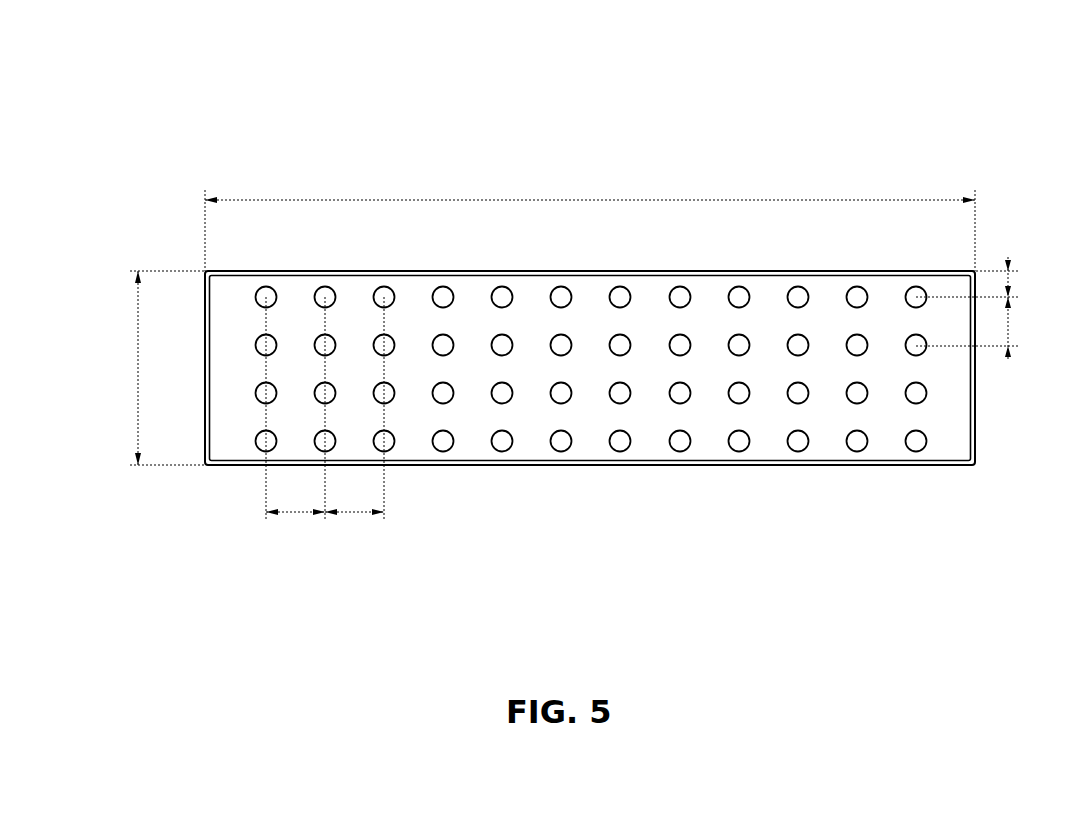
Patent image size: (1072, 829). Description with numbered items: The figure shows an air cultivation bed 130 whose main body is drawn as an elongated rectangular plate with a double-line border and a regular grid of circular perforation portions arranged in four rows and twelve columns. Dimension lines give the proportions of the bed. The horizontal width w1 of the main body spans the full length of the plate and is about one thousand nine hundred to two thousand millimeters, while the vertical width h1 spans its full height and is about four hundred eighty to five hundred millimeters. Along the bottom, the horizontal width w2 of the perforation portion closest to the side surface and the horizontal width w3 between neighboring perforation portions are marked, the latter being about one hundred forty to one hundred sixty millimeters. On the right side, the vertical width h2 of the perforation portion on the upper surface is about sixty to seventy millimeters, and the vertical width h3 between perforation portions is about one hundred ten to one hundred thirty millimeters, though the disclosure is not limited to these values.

The air cultivation bed 130 is at (192, 73).
The horizontal width of the main body w1 is at (590, 219).
The vertical width of the main body h1 is at (150, 368).
The horizontal width of the perforation portion closest to the side surface w2 is at (295, 422).
The horizontal width between the perforation portions w3 is at (354, 422).
The vertical width of the perforation portion on the upper surface h2 is at (984, 280).
The vertical width between the perforation portions h3 is at (984, 328).